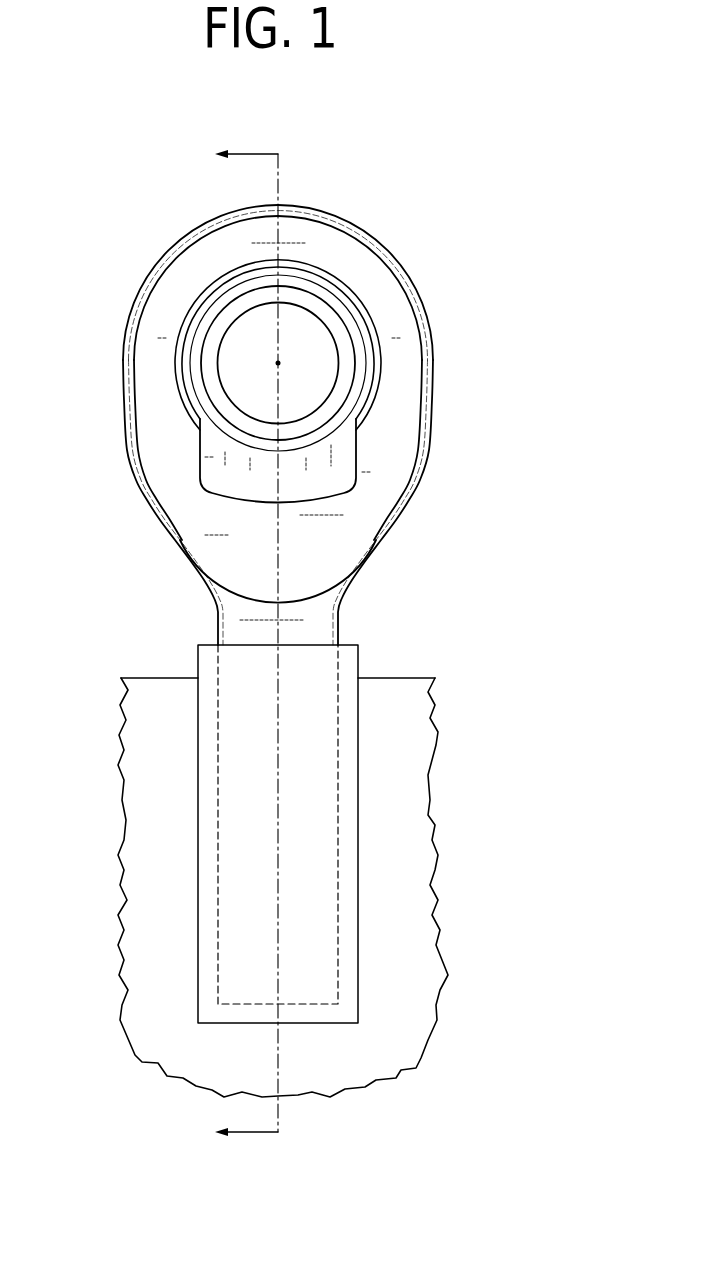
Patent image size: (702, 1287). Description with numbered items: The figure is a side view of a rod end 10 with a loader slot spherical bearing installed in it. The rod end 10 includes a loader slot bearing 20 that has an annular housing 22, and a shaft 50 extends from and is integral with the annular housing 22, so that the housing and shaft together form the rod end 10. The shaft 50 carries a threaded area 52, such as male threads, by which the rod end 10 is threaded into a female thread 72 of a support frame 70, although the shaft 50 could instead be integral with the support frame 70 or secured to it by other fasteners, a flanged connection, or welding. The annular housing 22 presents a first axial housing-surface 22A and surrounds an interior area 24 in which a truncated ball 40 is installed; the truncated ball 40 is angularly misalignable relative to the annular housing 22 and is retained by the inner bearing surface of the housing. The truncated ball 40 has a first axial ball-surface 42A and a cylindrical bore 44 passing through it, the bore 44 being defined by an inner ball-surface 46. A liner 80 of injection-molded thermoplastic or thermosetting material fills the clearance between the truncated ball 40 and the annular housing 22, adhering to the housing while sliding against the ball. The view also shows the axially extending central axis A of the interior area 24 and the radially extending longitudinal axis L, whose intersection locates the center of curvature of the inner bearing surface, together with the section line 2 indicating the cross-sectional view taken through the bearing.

The rod end 10 is at (440, 122).
The loader slot bearing 20 is at (309, 420).
The annular housing 22 is at (247, 425).
The first axial housing-surface 22A is at (186, 282).
The interior area 24 is at (180, 396).
The truncated ball 40 is at (343, 363).
The first axial ball-surface 42A is at (340, 397).
The cylindrical bore 44 is at (292, 337).
The inner ball-surface 46 is at (321, 341).
The liner 80 is at (208, 463).
The shaft 50 is at (379, 838).
The threaded area 52 is at (337, 834).
The support frame 70 is at (255, 887).
The female thread 72 is at (197, 733).
The section line 2- 2 is at (249, 639).
The central axis A is at (279, 365).
The longitudinal axis L is at (290, 532).